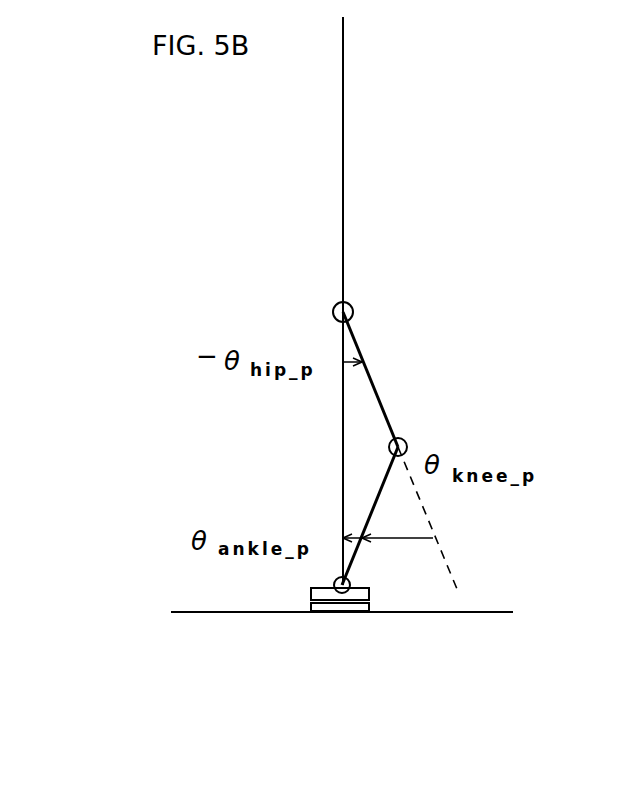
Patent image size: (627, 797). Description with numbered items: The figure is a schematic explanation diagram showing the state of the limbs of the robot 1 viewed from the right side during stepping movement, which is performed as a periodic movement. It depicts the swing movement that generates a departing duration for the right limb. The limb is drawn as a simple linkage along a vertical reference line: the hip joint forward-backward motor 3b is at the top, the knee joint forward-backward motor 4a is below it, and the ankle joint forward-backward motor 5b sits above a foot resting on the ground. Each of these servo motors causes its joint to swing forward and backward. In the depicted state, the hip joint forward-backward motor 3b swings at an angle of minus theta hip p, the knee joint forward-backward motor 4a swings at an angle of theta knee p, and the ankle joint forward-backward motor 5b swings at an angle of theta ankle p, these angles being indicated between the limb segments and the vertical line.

The robot 1 is at (452, 170).
The hip joint forward-backward motor 3b is at (350, 306).
The knee joint forward-backward motor 4a is at (405, 440).
The ankle joint forward-backward motor 5b is at (352, 578).